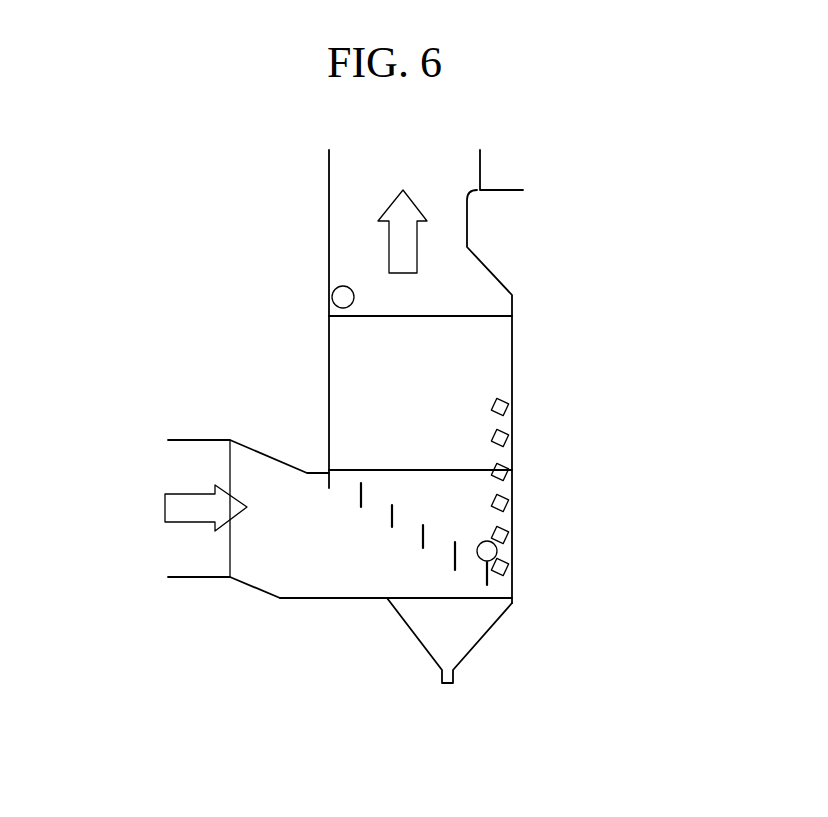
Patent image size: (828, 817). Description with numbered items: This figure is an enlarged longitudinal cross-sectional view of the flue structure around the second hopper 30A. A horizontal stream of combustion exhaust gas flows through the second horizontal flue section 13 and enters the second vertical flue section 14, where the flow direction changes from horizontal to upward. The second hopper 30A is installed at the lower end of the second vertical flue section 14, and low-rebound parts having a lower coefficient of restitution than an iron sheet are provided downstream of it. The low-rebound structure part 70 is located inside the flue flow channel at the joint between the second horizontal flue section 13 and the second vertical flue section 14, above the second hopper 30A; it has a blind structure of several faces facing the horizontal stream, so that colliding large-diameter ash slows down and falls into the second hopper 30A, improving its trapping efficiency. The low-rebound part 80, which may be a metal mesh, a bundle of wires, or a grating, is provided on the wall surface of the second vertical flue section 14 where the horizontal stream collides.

The second horizontal flue section 13 is at (190, 553).
The second vertical flue section 14 is at (483, 343).
The low-rebound structure part 70 is at (390, 516).
The low-rebound part 80 is at (510, 495).
The second hopper 30A is at (405, 622).